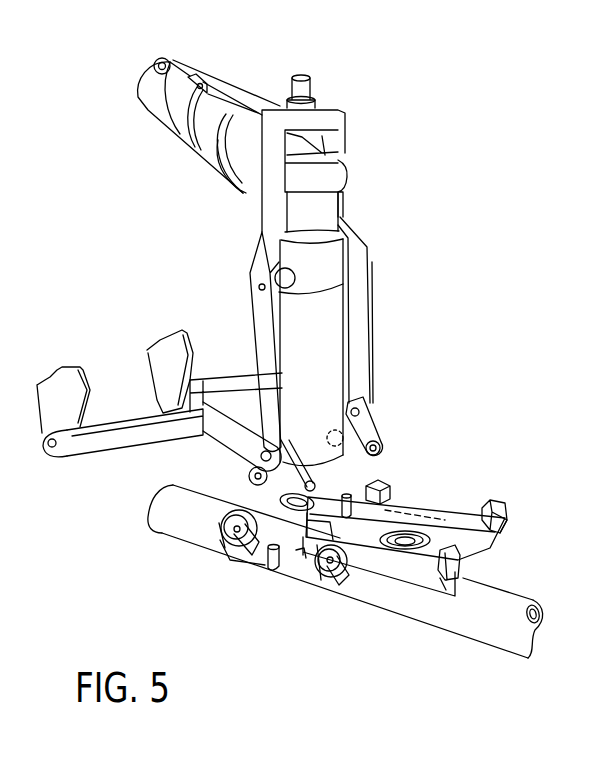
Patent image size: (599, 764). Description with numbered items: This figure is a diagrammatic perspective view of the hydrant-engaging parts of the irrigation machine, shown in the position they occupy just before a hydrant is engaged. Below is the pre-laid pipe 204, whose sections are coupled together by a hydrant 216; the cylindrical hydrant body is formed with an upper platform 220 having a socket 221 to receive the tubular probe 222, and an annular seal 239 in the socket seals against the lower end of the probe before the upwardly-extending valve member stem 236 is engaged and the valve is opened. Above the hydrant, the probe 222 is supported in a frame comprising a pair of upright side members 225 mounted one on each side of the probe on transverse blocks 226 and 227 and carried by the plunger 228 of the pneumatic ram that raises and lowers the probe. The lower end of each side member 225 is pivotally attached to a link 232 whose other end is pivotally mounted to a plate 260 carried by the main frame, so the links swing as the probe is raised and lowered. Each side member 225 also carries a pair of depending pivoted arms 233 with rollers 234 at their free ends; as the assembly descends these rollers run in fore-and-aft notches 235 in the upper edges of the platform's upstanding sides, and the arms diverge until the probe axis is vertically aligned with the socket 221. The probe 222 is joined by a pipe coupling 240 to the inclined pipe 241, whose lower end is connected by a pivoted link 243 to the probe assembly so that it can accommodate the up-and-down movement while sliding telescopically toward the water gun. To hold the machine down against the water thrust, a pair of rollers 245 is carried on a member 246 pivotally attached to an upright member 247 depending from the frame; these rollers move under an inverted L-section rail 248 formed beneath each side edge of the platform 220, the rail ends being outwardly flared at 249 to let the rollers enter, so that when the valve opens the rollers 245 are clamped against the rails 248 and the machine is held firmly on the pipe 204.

The pipe 204 is at (167, 523).
The hydrant 216 is at (393, 612).
The upper platform 220 is at (467, 550).
The socket 221 is at (372, 597).
The probe 222 is at (243, 386).
The upright side members 225 is at (357, 301).
The transverse block 226 is at (353, 259).
The transverse block 227 is at (332, 117).
The plunger 228 is at (304, 88).
The link 232 is at (147, 428).
The pivoted arms 233 is at (257, 474).
The rollers 234 is at (250, 458).
The notches 235 is at (462, 532).
The valve member stem 236 is at (508, 511).
The annular seal 239 is at (408, 560).
The pipe coupling 240 is at (246, 167).
The inclined pipe 241 is at (177, 75).
The pivoted link 243 is at (241, 97).
The rollers 245 is at (223, 520).
The member 246 is at (390, 497).
The upright member 247 is at (348, 490).
The inverted L-section rail 248 is at (505, 529).
The flared rail ends 249 is at (300, 553).
The plate 260 is at (152, 355).